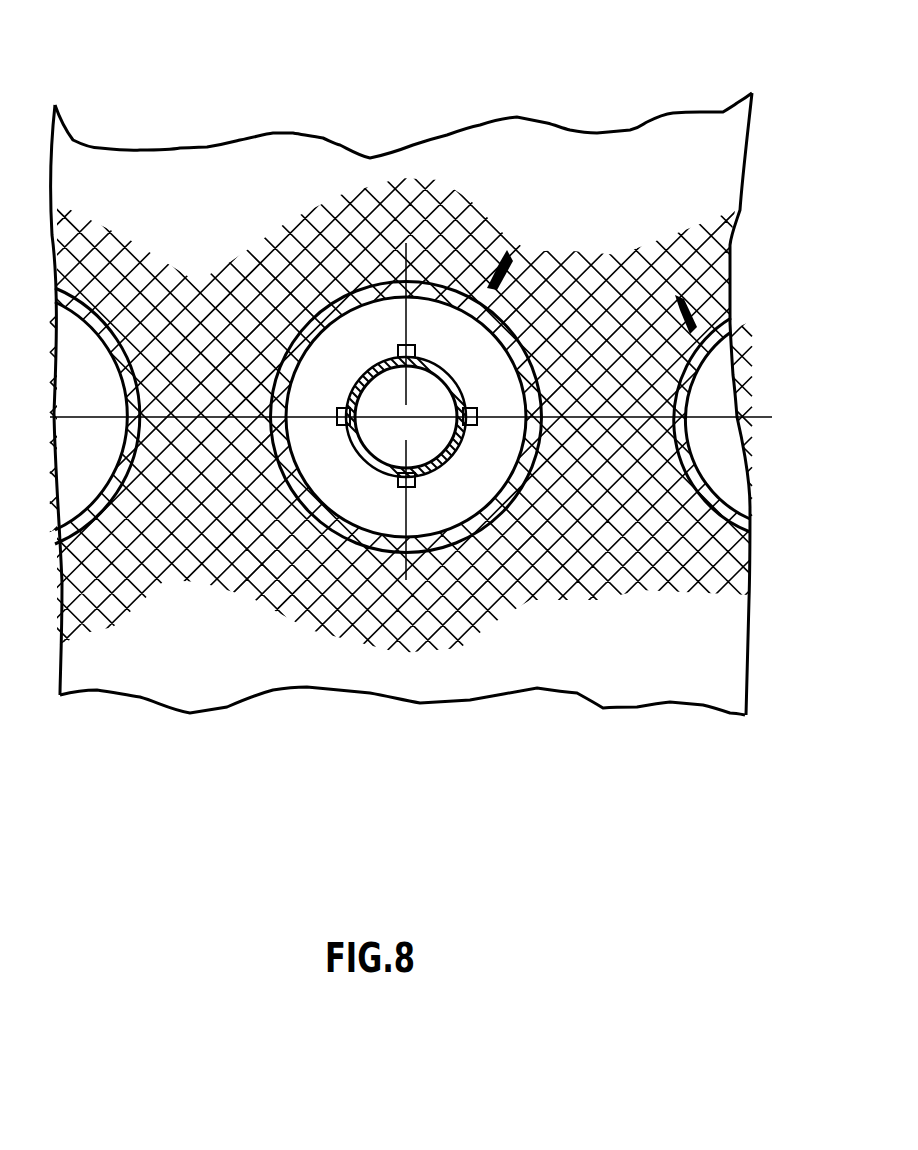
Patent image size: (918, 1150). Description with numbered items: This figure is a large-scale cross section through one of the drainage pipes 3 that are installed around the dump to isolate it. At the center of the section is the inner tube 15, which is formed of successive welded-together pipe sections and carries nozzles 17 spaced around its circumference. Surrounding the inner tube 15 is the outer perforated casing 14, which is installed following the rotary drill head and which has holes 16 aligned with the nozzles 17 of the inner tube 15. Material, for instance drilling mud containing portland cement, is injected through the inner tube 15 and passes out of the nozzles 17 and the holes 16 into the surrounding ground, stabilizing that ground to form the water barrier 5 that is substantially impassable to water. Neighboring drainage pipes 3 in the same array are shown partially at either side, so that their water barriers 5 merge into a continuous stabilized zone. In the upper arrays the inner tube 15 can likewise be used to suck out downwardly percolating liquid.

The drainage pipe 3 is at (677, 297).
The water barrier 5 is at (203, 398).
The outer perforated casing 14 is at (727, 307).
The inner tube 15 is at (373, 365).
The holes 16 is at (222, 560).
The nozzles 17 is at (414, 348).